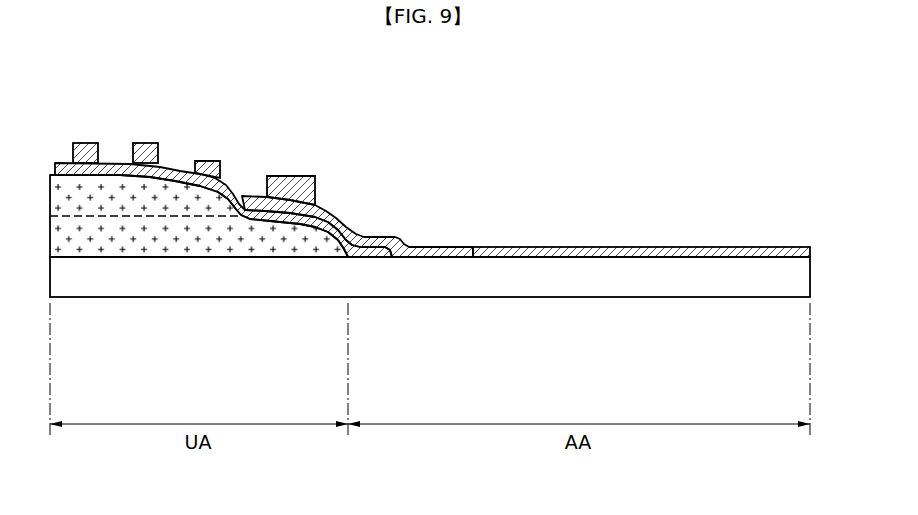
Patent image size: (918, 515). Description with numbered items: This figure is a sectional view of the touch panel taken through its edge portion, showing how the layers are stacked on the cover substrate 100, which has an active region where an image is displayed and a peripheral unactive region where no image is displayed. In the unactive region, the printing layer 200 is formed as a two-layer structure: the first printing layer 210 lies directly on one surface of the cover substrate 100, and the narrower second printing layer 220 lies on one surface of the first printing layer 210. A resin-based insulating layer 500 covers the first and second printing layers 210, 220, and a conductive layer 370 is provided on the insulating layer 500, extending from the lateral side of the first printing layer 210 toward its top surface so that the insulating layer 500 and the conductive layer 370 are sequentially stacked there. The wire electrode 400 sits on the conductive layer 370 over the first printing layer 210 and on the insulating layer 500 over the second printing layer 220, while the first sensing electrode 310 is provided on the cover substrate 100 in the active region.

The cover substrate 100 is at (277, 283).
The printing layer 200 is at (199, 288).
The first printing layer 210 is at (187, 238).
The second printing layer 220 is at (103, 197).
The first sensing electrode 310 is at (598, 248).
The conductive layer 370 is at (346, 222).
The wire electrode 400 is at (85, 153).
The insulating layer 500 is at (178, 172).